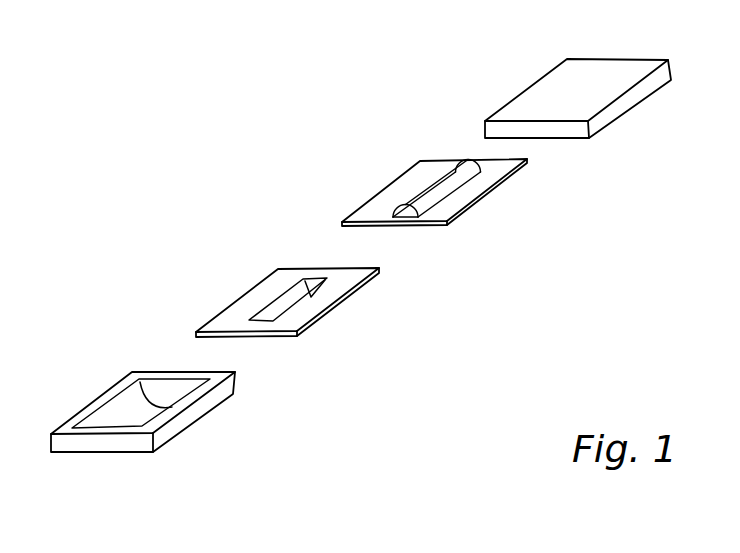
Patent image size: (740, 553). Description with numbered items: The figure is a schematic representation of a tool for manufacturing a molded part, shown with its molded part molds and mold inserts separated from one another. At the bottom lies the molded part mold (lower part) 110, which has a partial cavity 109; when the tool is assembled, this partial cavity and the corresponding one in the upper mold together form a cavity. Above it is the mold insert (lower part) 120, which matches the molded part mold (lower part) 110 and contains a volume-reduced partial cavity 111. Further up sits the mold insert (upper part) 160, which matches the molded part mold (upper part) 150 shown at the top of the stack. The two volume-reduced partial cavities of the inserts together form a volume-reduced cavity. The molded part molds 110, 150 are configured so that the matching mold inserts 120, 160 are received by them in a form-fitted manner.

The molded part mold (upper part) 150 is at (541, 104).
The mold insert (upper part) 160 is at (451, 201).
The mold insert (lower part) 120 is at (280, 285).
The volume-reduced partial cavity 111 is at (273, 312).
The molded part mold (lower part) 110 is at (153, 413).
The partial cavity 109 is at (132, 400).